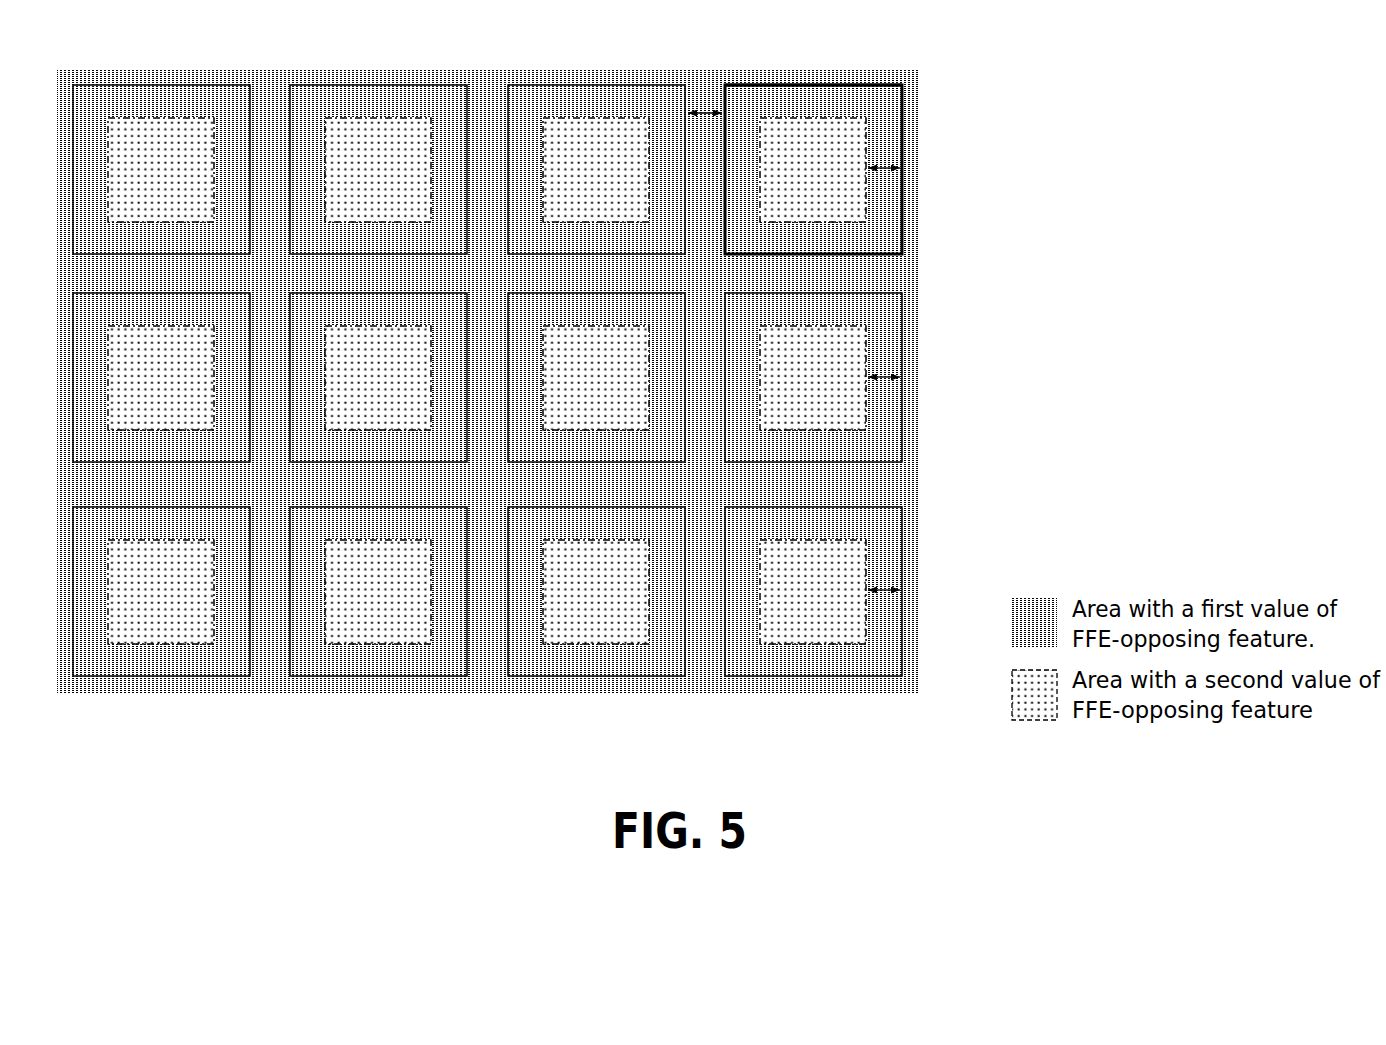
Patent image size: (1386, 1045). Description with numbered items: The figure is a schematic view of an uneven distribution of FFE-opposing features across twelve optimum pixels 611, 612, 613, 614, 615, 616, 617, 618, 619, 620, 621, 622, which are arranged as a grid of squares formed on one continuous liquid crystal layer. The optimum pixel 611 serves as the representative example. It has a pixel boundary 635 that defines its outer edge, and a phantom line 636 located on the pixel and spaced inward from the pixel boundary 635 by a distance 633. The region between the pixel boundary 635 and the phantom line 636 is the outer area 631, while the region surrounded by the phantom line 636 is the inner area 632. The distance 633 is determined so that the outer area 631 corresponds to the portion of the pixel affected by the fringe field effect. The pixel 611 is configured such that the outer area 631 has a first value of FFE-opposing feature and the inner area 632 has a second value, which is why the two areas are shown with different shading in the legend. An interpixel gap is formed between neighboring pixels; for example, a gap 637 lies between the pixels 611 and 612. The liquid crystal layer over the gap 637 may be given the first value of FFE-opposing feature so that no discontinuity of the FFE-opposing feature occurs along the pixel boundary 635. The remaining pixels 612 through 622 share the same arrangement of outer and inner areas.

The optimum pixel 611 is at (904, 157).
The optimum pixel 612 is at (698, 252).
The optimum pixel 613 is at (480, 252).
The optimum pixel 614 is at (263, 252).
The optimum pixel 615 is at (915, 460).
The optimum pixel 616 is at (698, 460).
The optimum pixel 617 is at (480, 460).
The optimum pixel 618 is at (263, 460).
The optimum pixel 619 is at (915, 674).
The optimum pixel 620 is at (698, 674).
The optimum pixel 621 is at (480, 674).
The optimum pixel 622 is at (263, 674).
The outer area 631 is at (855, 151).
The inner area 632 is at (921, 176).
The distance 633 is at (923, 141).
The pixel boundary 635 is at (813, 51).
The phantom line 636 is at (806, 120).
The gap 637 is at (699, 110).